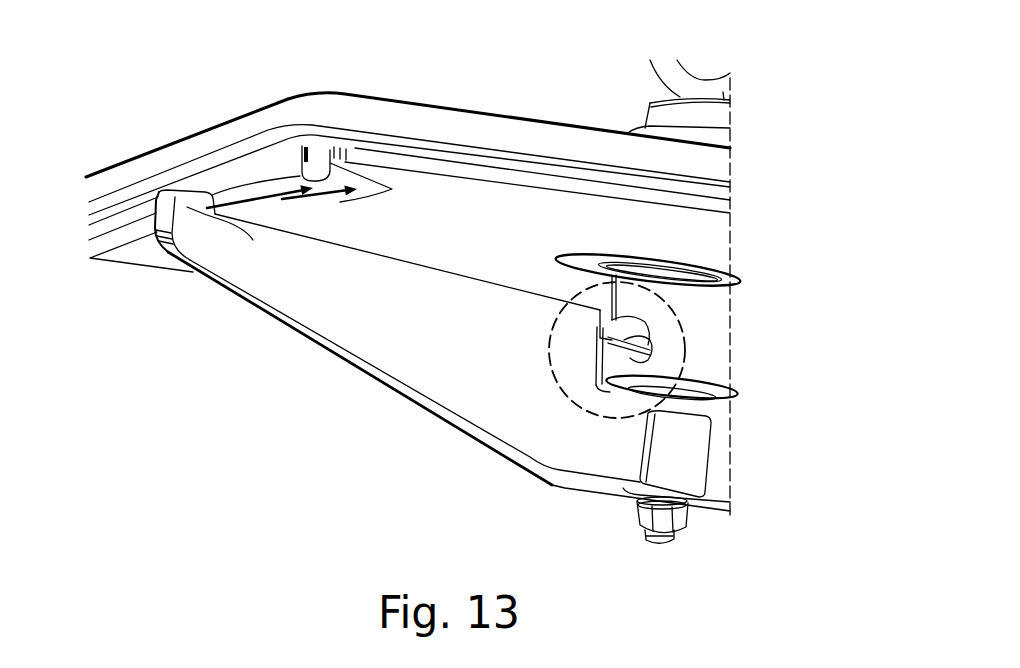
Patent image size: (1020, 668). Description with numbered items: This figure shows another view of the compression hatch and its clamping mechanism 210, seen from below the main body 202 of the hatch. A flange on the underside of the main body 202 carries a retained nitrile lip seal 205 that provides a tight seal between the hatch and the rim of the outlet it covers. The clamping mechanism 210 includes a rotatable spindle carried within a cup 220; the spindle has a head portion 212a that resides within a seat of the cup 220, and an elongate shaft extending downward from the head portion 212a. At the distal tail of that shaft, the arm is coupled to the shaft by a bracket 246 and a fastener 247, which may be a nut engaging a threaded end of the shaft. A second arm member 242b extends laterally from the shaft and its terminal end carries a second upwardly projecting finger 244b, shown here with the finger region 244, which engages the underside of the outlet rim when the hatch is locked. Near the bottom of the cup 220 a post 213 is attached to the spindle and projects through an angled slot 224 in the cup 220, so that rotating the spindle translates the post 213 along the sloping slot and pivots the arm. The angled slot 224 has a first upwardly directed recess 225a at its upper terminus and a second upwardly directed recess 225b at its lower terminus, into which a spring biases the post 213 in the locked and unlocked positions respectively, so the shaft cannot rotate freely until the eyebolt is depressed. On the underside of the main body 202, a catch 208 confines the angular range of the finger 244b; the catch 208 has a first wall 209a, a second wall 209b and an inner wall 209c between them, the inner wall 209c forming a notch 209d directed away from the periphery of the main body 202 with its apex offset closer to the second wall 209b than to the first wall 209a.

The main body 202 is at (443, 120).
The retained nitrile lip seal 205 is at (240, 162).
The catch 208 is at (206, 178).
The first wall 209a is at (250, 214).
The second wall 209b is at (294, 145).
The inner wall 209c is at (283, 186).
The notch 209d is at (330, 197).
The clamping mechanism 210 is at (194, 503).
The head portion 212a is at (660, 111).
The post 213 is at (600, 327).
The cup 220 is at (712, 345).
The angled slot 224 is at (590, 350).
The first upwardly directed recess 225a is at (617, 322).
The second upwardly directed recess 225b is at (635, 352).
The second arm member 242b is at (291, 272).
The foot 244 is at (603, 457).
The second upwardly projecting finger 244b is at (195, 268).
The bracket 246 is at (690, 455).
The fastener 247 is at (643, 516).